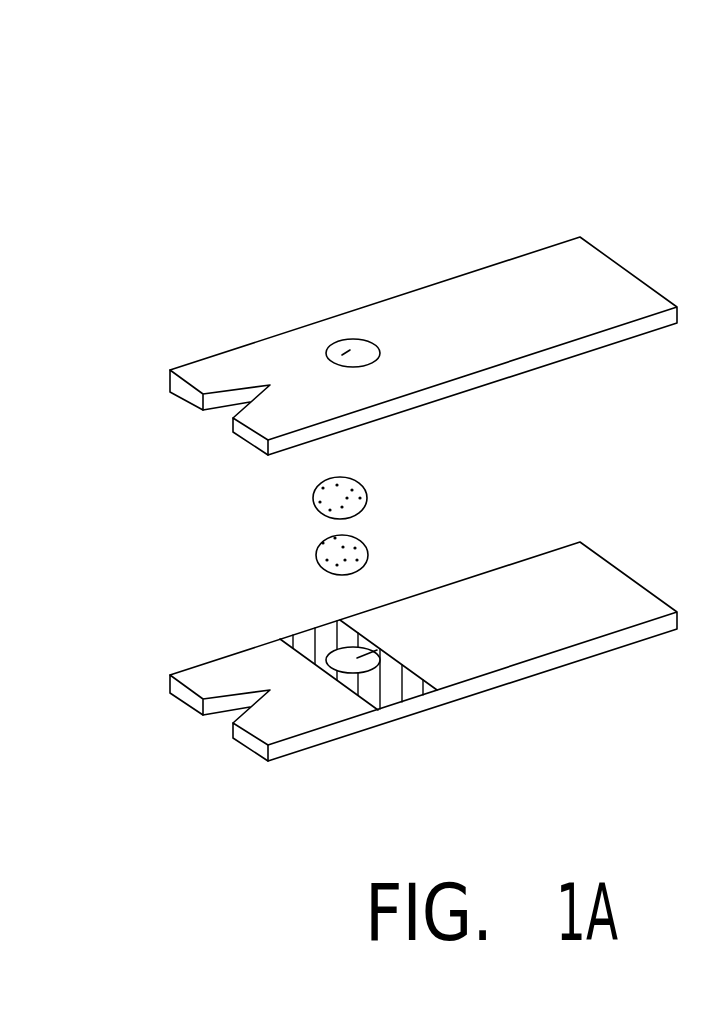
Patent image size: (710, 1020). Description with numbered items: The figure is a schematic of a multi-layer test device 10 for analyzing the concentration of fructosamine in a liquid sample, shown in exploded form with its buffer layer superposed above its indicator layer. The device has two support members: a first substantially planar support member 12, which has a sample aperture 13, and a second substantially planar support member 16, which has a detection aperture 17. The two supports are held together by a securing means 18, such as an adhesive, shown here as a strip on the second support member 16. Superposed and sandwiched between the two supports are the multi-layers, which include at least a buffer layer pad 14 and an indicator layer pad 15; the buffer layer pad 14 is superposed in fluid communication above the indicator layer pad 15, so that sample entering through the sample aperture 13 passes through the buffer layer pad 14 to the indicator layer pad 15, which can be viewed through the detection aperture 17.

The multi-layer test device 10 is at (440, 120).
The first substantially planar support member 12 is at (483, 300).
The sample aperture 13 is at (342, 355).
The buffer layer pad 14 is at (343, 502).
The indicator layer pad 15 is at (332, 555).
The second substantially planar support member 16 is at (473, 645).
The detection aperture 17 is at (357, 658).
The securing means 18 is at (398, 688).